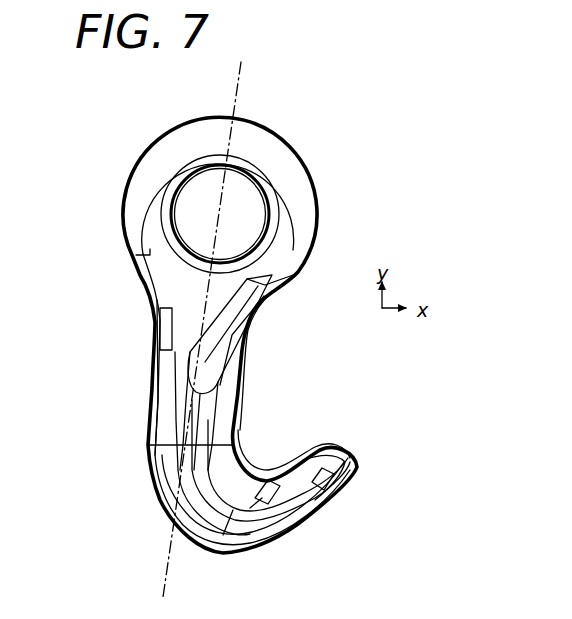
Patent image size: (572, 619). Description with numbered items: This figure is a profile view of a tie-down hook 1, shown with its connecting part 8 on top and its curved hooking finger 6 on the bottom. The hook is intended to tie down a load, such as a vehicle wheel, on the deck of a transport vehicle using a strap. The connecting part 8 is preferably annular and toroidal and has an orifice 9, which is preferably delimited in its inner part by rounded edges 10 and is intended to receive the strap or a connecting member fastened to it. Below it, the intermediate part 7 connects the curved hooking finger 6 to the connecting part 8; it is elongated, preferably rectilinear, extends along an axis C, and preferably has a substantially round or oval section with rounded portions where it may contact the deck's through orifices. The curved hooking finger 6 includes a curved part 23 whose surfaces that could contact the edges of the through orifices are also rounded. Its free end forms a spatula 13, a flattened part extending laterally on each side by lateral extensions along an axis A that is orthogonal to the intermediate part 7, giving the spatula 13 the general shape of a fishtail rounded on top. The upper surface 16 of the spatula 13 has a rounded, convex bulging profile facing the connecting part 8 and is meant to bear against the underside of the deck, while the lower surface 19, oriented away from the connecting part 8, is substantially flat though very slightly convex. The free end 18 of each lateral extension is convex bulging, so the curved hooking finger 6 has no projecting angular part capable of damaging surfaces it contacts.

The tie-down hook 1 is at (413, 187).
The curved hooking finger 6 is at (163, 540).
The intermediate part 7 is at (123, 397).
The connecting part 8 is at (108, 199).
The orifice 9 is at (201, 210).
The rounded edges 10 is at (270, 178).
The spatula 13 is at (300, 538).
The upper surface 16 is at (323, 448).
The free end 18 is at (315, 517).
The lower surface 19 is at (333, 500).
The curved part 23 is at (155, 503).
The axis C is at (238, 95).
The axis A is at (4, 433).